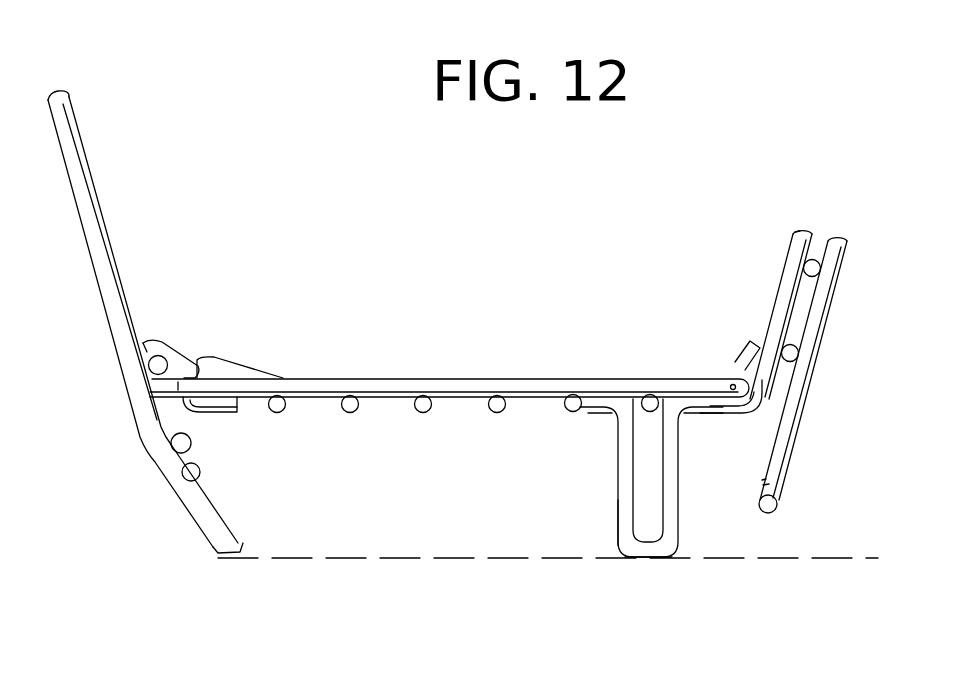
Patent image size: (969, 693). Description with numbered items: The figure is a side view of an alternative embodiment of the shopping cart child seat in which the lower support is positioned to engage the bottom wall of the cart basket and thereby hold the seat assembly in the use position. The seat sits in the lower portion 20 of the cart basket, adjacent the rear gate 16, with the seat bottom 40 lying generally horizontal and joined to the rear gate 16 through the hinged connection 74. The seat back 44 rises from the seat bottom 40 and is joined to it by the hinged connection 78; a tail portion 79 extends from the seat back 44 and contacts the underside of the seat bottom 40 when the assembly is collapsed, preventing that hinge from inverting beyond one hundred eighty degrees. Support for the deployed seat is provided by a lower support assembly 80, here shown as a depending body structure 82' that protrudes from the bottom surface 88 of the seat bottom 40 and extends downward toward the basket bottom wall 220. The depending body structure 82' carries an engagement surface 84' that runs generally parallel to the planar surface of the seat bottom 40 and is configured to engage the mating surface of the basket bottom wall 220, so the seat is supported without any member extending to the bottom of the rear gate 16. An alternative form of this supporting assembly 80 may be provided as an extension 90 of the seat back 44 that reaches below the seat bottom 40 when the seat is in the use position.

The rear gate 16 is at (100, 247).
The lower portion of the cart basket 20 is at (802, 190).
The seat bottom 40 is at (402, 383).
The seat back 44 is at (797, 254).
The hinged connection of the seat bottom to the rear gate 74 is at (158, 360).
The hinged connection between seat back and seat bottom 78 is at (750, 387).
The tail portion 79 is at (800, 366).
The lower support assembly 80 is at (603, 513).
The depending body structure 82' is at (659, 478).
The engagement surface 84' is at (647, 595).
The bottom surface of the seat bottom 88 is at (500, 411).
The extension of the seat back 90 is at (780, 482).
The basket bottom wall 220 is at (378, 562).